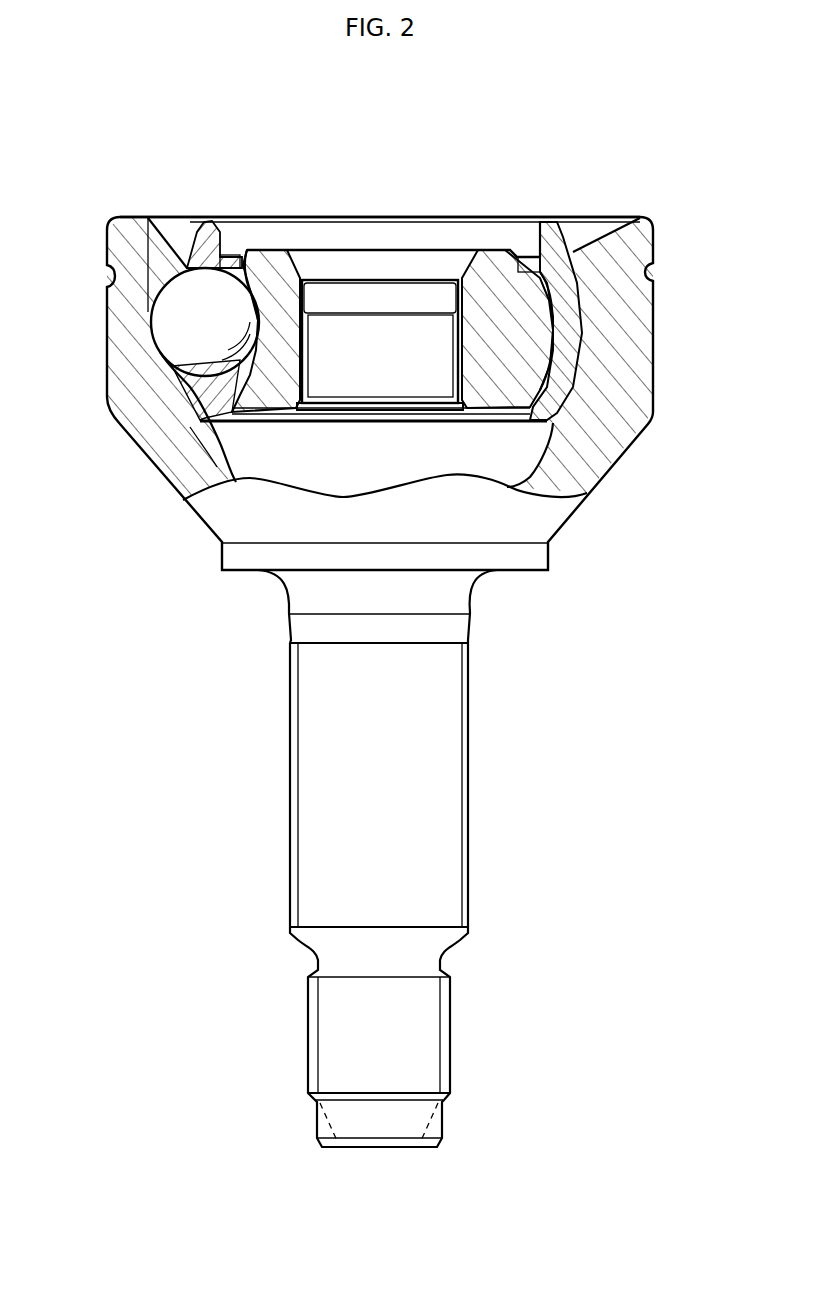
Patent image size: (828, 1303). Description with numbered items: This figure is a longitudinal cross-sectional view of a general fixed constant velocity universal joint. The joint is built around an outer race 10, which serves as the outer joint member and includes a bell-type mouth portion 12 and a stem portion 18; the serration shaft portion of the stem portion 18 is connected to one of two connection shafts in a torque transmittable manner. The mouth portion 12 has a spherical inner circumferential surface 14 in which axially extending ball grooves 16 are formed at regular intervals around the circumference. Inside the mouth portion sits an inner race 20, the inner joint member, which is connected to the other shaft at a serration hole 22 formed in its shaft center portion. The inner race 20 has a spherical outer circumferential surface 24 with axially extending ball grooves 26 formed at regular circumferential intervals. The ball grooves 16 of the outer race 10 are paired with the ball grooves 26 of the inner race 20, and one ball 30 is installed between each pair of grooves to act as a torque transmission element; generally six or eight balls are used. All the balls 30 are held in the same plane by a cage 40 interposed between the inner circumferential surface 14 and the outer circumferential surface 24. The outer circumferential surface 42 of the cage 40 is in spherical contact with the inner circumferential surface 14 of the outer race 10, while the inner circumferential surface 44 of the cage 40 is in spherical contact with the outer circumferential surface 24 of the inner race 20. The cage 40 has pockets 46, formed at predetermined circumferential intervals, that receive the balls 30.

The outer race 10 is at (662, 216).
The mouth portion 12 is at (652, 348).
The spherical inner circumferential surface 14 is at (585, 318).
The ball grooves 16 is at (170, 400).
The stem portion 18 is at (445, 800).
The inner race 20 is at (493, 248).
The serration hole 22 is at (365, 373).
The spherical outer circumferential surface 24 is at (552, 362).
The ball grooves 26 is at (257, 300).
The balls 30 is at (162, 326).
The cage 40 is at (198, 233).
The outer circumferential surface 42 is at (586, 282).
The inner circumferential surface 44 is at (553, 425).
The pockets 46 is at (150, 288).